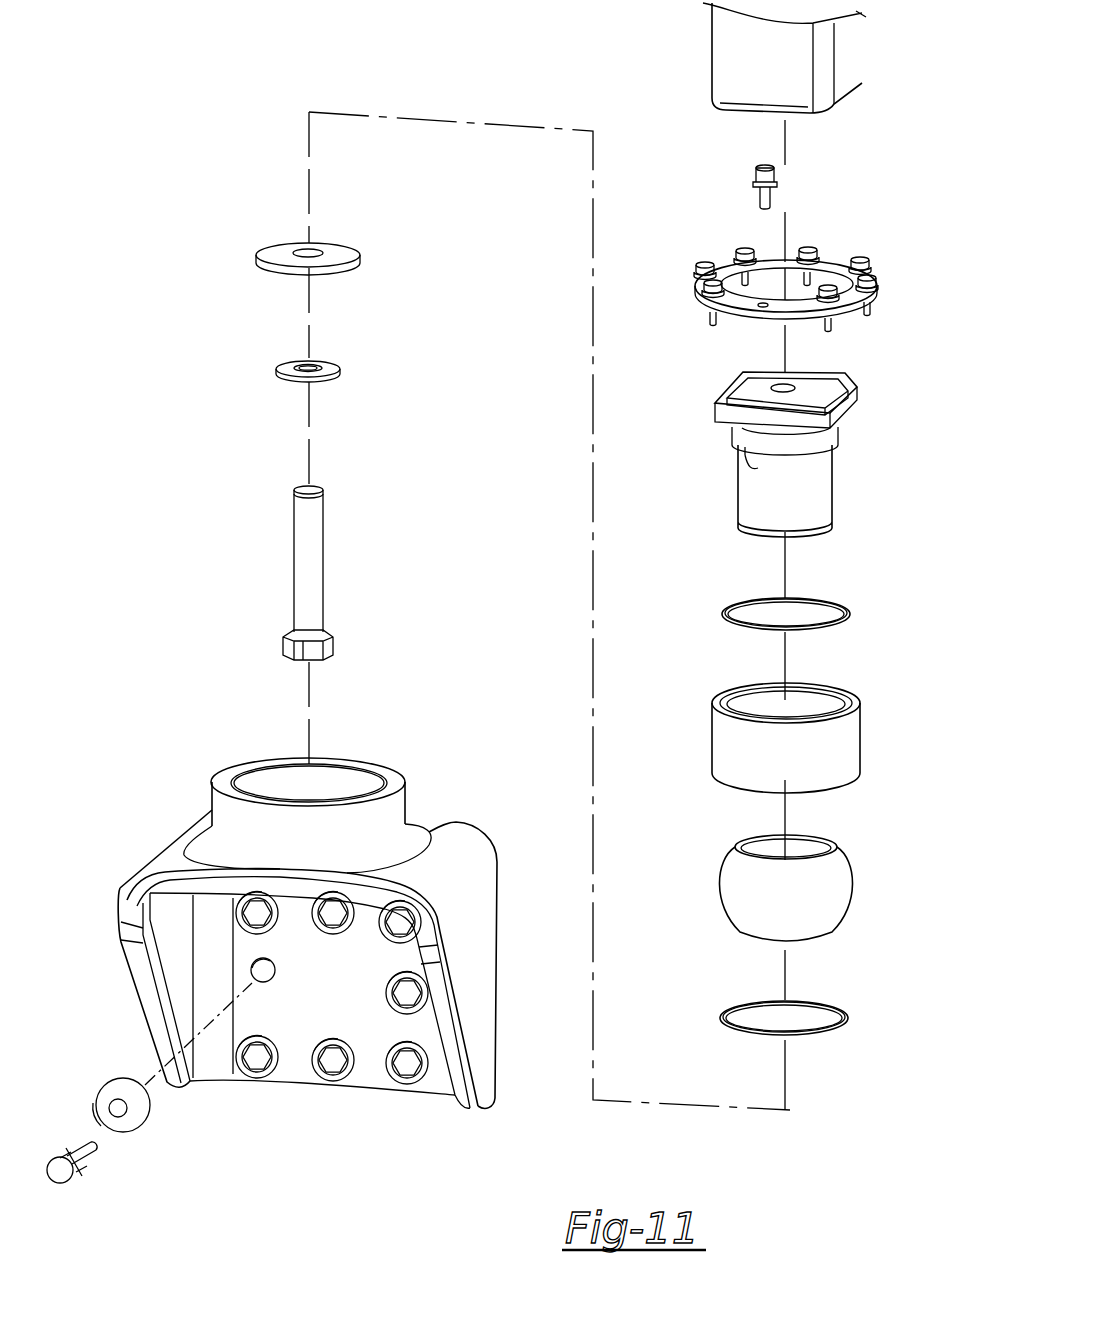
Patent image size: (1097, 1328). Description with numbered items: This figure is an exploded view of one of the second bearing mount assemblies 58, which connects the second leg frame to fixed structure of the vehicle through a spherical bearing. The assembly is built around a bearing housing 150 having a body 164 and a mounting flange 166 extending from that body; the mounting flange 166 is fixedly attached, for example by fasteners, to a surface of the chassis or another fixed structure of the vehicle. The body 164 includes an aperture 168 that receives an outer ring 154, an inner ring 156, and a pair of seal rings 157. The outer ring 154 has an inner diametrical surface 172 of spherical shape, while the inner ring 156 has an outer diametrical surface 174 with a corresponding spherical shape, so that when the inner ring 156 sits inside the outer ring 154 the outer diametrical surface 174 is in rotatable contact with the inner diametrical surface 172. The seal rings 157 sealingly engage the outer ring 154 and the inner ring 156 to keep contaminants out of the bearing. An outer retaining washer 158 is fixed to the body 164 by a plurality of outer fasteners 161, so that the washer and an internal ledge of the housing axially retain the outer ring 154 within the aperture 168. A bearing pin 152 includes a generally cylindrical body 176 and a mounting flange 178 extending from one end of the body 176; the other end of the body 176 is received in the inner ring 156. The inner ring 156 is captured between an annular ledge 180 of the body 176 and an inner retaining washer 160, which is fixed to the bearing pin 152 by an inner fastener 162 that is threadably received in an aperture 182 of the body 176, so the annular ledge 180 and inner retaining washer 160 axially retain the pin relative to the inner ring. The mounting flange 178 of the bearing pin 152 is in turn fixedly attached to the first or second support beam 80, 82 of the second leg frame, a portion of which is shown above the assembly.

The second bearing mount assembly 58 is at (356, 82).
The first support beam 80 is at (831, 58).
The second support beam 82 is at (845, 45).
The bearing housing 150 is at (292, 924).
The bearing pin 152 is at (795, 438).
The outer ring 154 is at (826, 717).
The inner ring 156 is at (821, 889).
The seal rings 157 is at (838, 616).
The outer retaining washer 158 is at (832, 265).
The inner retaining washer 160 is at (340, 254).
The outer fasteners 161 is at (875, 307).
The inner fastener 162 is at (310, 566).
The body 164 is at (387, 813).
The mounting flange 166 is at (371, 1075).
The aperture 168 is at (336, 787).
The inner diametrical surface 172 is at (810, 702).
The outer diametrical surface 174 is at (826, 915).
The body 176 is at (779, 482).
The mounting flange 178 is at (810, 384).
The annular ledge 180 is at (742, 466).
The aperture 182 is at (778, 378).